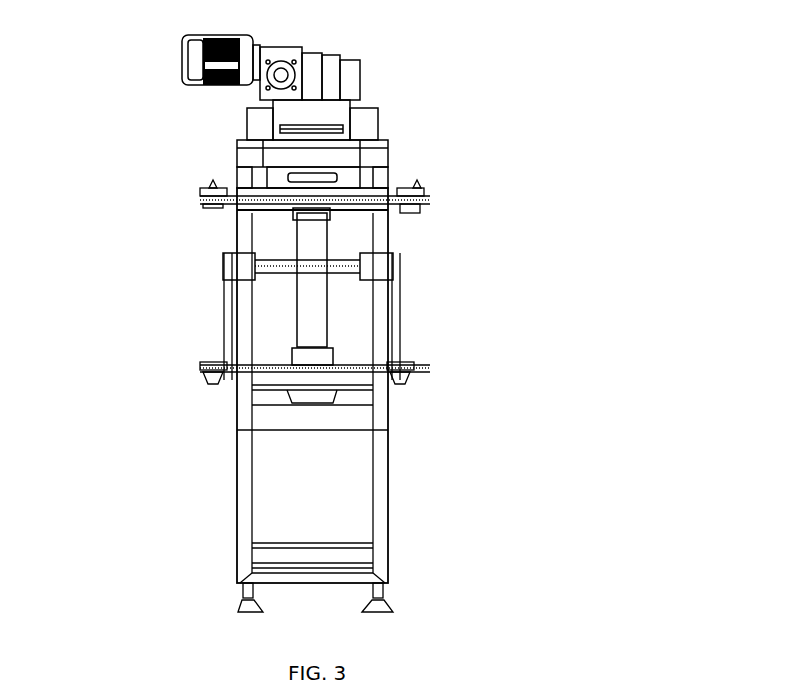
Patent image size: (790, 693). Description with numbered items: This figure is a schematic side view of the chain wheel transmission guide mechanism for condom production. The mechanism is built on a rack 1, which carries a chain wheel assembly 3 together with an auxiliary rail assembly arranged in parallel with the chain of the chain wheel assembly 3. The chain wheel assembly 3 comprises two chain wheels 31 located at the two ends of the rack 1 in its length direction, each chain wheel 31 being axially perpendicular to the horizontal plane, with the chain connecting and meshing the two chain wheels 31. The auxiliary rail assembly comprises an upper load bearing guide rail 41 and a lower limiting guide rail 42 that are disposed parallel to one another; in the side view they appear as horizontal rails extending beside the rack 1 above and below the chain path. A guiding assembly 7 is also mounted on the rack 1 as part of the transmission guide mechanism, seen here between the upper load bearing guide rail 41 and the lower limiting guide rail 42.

The rack 1 is at (377, 528).
The chain wheel assembly 3 is at (305, 201).
The guiding assembly 7 is at (227, 267).
The chain wheel 31 is at (423, 200).
The upper load bearing guide rail 41 is at (213, 180).
The lower limiting guide rail 42 is at (213, 385).